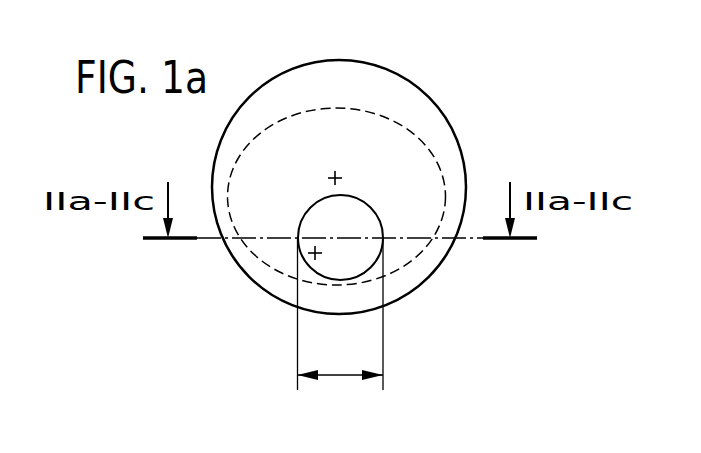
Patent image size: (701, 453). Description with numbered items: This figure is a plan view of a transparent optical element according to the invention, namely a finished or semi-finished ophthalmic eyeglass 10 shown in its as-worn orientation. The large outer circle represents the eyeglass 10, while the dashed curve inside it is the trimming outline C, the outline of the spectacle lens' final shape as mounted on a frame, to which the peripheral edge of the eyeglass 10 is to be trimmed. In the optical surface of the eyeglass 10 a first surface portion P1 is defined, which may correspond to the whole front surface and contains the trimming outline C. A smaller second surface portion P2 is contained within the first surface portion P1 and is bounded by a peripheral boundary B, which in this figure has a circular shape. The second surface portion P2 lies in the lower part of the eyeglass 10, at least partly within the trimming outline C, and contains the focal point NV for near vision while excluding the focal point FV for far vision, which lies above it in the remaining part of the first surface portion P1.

The ophthalmic eyeglass 10 is at (462, 292).
The trimming outline C is at (369, 106).
The peripheral boundary B is at (373, 213).
The first surface portion P1 is at (407, 155).
The second surface portion P2 is at (368, 232).
The focal point for far vision FV is at (319, 167).
The focal point for near vision NV is at (337, 255).